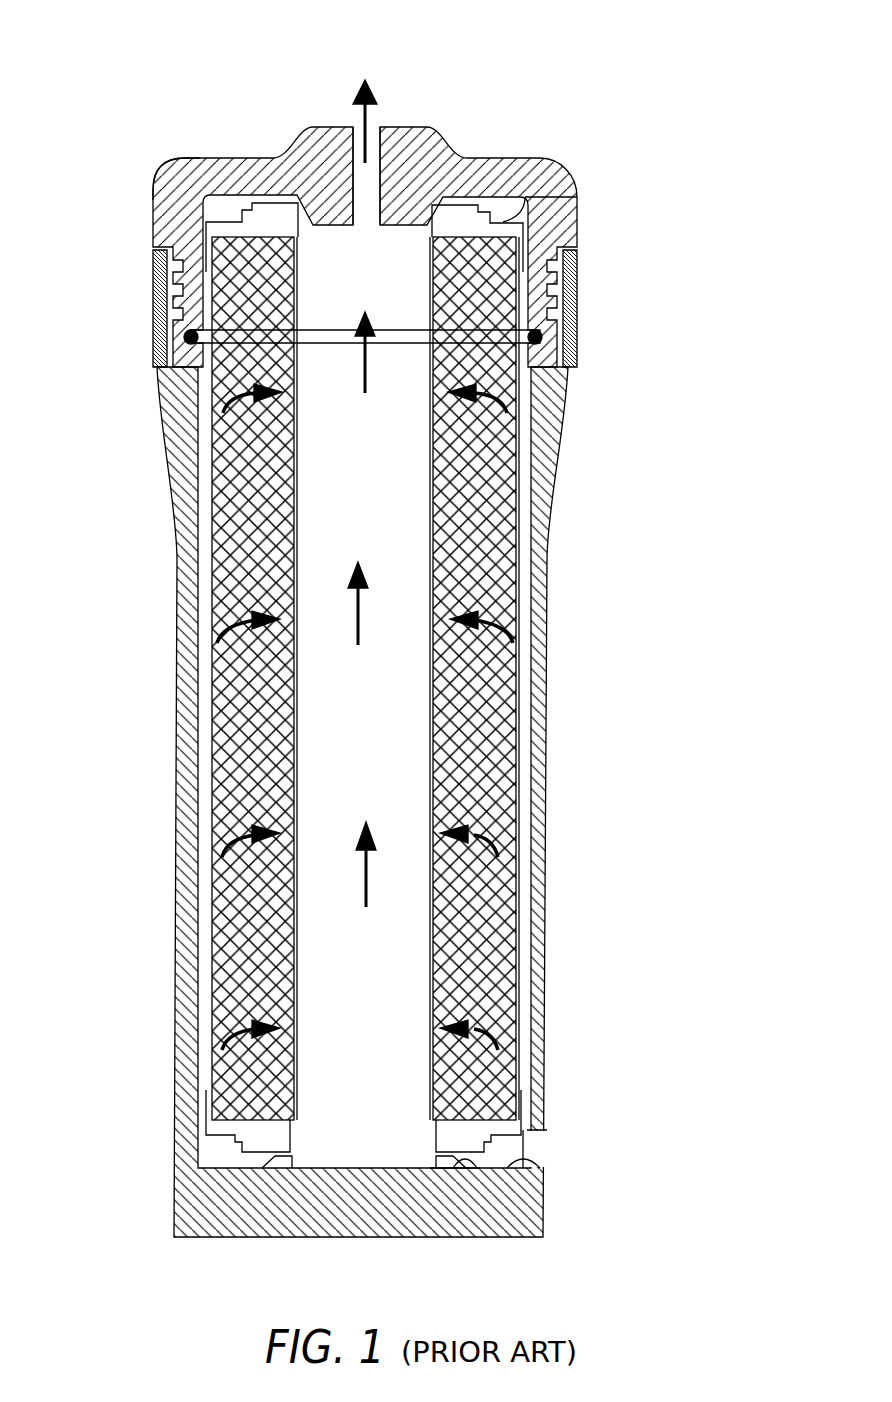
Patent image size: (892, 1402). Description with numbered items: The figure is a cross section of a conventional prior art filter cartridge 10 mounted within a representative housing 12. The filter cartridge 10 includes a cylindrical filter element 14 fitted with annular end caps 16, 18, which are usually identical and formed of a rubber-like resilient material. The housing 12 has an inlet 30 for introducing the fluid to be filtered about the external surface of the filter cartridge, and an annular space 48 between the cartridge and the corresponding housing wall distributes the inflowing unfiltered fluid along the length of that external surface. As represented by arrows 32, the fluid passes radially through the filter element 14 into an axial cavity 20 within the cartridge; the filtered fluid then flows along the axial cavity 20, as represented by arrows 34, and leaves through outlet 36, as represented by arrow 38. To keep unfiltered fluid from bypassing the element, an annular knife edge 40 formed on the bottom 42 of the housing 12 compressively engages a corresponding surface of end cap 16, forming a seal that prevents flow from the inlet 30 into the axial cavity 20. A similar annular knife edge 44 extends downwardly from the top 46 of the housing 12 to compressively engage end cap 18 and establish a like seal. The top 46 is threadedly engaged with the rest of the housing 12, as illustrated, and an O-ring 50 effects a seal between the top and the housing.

The filter cartridge 10 is at (379, 616).
The housing 12 is at (549, 668).
The filter element 14 is at (490, 748).
The end cap 16 is at (233, 1140).
The end cap 18 is at (575, 197).
The axial cavity 20 is at (297, 718).
The inlet 30 is at (548, 1152).
The arrows 32 is at (250, 398).
The arrows 34 is at (366, 373).
The outlet 36 is at (381, 163).
The arrow 38 is at (374, 92).
The annular knife edge 40 is at (478, 1170).
The bottom 42 is at (542, 1163).
The annular knife edge 44 is at (264, 195).
The top 46 is at (182, 160).
The annular space 48 is at (522, 488).
The O-ring 50 is at (542, 337).